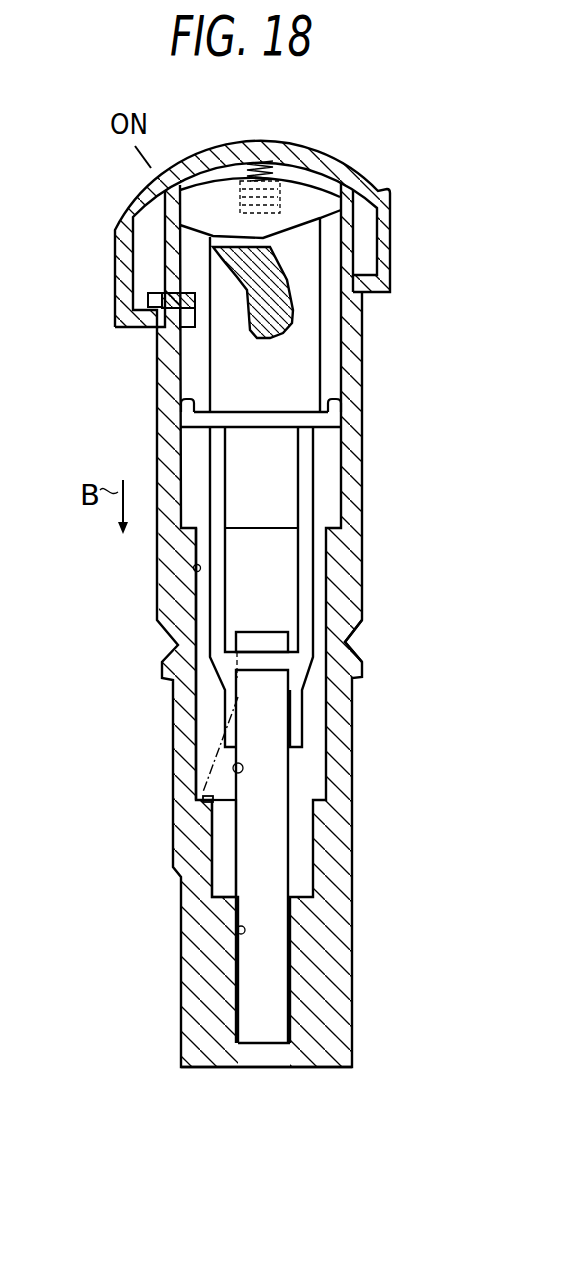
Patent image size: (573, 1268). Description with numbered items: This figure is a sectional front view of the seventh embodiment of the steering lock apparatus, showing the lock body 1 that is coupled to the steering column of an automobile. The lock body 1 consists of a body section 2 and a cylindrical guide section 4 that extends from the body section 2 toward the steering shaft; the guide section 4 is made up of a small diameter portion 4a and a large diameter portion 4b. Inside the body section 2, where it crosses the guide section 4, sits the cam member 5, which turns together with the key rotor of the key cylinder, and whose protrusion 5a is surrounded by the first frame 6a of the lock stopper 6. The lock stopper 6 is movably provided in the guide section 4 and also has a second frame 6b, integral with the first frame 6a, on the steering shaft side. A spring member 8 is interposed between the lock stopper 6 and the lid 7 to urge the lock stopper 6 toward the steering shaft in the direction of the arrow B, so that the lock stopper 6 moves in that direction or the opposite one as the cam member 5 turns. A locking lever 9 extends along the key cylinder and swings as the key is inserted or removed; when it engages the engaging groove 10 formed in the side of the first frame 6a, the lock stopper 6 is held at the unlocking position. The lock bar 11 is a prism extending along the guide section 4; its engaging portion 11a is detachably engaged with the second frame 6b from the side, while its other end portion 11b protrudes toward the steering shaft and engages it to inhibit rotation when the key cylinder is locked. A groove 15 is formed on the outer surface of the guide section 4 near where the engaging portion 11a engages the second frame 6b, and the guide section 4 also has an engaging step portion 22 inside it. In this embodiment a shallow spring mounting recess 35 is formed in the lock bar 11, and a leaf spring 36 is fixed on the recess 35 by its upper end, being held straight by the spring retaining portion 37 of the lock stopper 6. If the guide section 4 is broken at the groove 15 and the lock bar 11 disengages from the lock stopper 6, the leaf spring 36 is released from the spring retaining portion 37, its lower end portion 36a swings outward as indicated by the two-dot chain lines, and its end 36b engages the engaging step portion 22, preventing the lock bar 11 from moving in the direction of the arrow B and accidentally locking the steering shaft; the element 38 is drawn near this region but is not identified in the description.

The lock body 1 is at (404, 206).
The body section 2 is at (392, 253).
The guide section 4 is at (355, 822).
The small diameter portion 4a is at (237, 930).
The large diameter portion 4b is at (194, 569).
The cam member 5 is at (284, 320).
The protrusion 5a is at (211, 238).
The lock stopper 6 is at (305, 458).
The first frame 6a is at (333, 381).
The second frame 6b is at (308, 563).
The lid 7 is at (317, 148).
The spring member 8 is at (274, 163).
The locking lever 9 is at (148, 297).
The engaging groove 10 is at (158, 328).
The lock bar 11 is at (273, 832).
The engaging portion 11a is at (277, 655).
The other end portion 11b is at (273, 1037).
The groove 15 is at (365, 630).
The engaging step portion 22 is at (199, 816).
The spring mounting recess 35 is at (246, 777).
The leaf spring 36 is at (240, 759).
The lower end portion 36a is at (218, 737).
The end 36b is at (172, 793).
The spring retaining portion 37 is at (237, 697).
The projection 38 is at (205, 803).